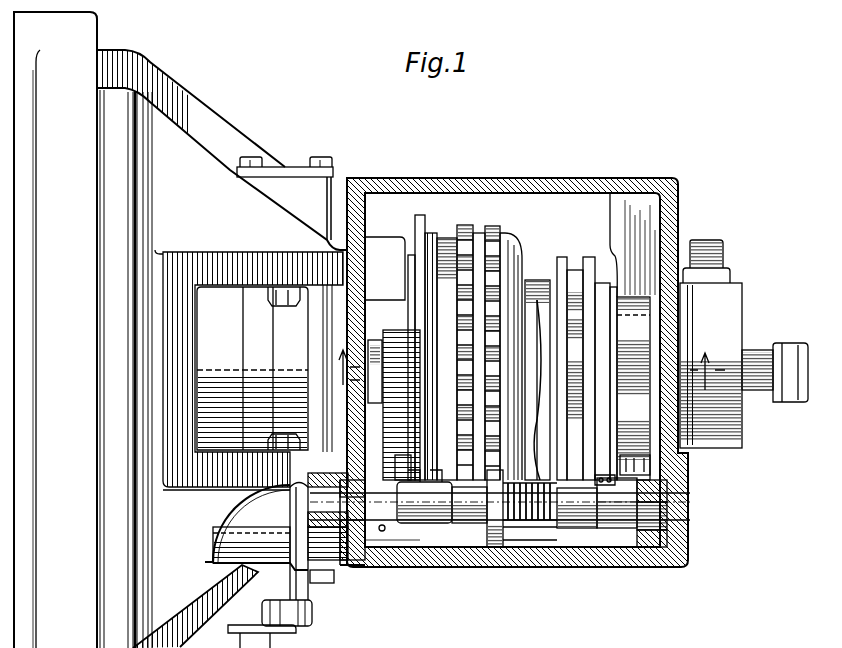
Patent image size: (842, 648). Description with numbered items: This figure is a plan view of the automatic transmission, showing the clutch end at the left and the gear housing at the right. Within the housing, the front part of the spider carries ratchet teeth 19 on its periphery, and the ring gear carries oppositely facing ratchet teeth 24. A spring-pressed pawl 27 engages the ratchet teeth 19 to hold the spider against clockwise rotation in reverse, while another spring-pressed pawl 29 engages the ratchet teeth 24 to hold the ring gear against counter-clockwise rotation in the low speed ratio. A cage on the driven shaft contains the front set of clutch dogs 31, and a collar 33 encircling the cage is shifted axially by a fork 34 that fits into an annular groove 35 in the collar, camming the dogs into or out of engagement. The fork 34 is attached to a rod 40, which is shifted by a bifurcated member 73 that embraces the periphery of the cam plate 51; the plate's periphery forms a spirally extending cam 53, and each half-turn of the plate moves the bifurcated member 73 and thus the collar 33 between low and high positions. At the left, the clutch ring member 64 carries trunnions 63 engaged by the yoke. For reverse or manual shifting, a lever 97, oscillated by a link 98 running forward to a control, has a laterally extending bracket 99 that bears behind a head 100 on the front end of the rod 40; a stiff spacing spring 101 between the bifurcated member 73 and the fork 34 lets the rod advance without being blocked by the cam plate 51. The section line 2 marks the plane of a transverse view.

The section line 2 is at (525, 370).
The ratchet teeth 19 is at (466, 226).
The ratchet teeth 24 is at (494, 227).
The spring-pressed pawl 27 is at (465, 470).
The spring-pressed pawl 29 is at (489, 547).
The front set of clutch dogs 31 is at (541, 282).
The collar 33 is at (590, 257).
The fork 34 is at (574, 333).
The annular groove 35 is at (566, 258).
The rod 40 is at (366, 565).
The cam plate 51 is at (418, 318).
The spirally extending cam 53 is at (418, 215).
The trunnions 63 is at (280, 301).
The ring member 64 is at (248, 348).
The bifurcated member 73 is at (410, 470).
The lever 97 is at (313, 618).
The link 98 is at (262, 636).
The bracket 99 is at (291, 565).
The head 100 is at (272, 491).
The spacing spring 101 is at (521, 530).